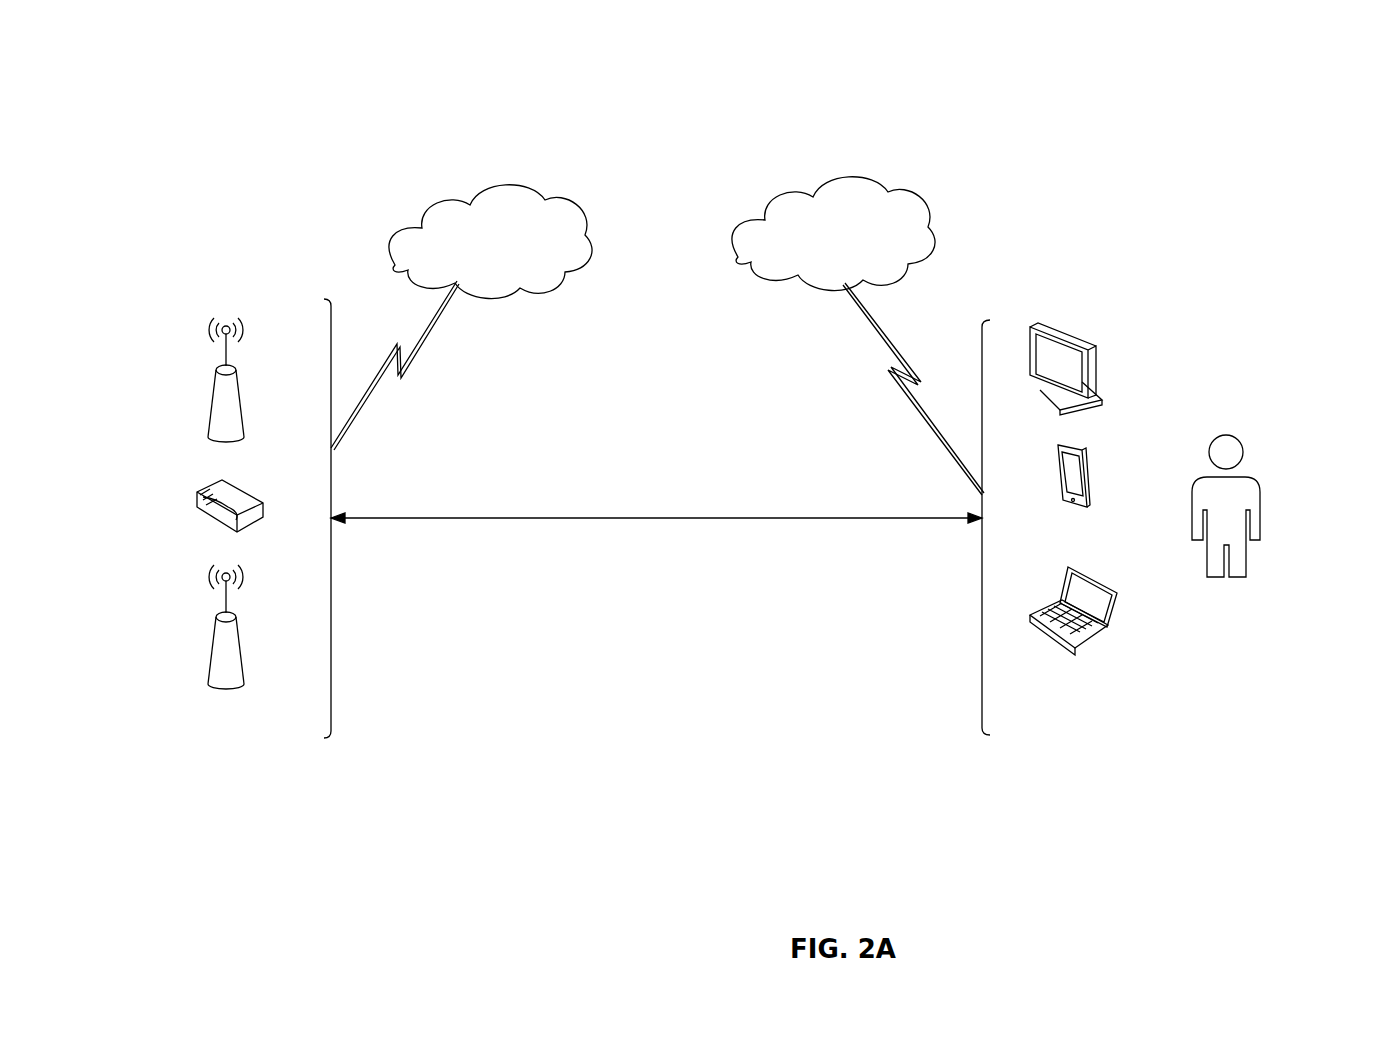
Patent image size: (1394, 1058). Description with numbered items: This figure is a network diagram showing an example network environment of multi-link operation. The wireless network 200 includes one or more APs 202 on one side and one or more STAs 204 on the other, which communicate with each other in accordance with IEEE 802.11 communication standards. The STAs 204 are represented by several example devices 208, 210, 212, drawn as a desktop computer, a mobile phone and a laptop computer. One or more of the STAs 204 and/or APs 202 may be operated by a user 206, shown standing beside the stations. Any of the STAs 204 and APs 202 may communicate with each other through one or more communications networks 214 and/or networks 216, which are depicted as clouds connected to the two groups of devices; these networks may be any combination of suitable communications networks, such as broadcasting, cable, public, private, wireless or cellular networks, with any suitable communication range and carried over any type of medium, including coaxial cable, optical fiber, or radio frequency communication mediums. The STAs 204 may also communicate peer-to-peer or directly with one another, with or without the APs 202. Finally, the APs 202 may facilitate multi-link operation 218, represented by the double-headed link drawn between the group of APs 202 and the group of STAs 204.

The wireless network 200 is at (1298, 98).
The APs 202 is at (290, 773).
The STAs 204 is at (1127, 773).
The user 206 is at (1259, 480).
The example device 208 is at (1078, 417).
The example device 210 is at (1074, 508).
The example device 212 is at (1080, 650).
The communications network 214 is at (553, 283).
The network 216 is at (757, 272).
The multi-link operation 218 is at (645, 520).